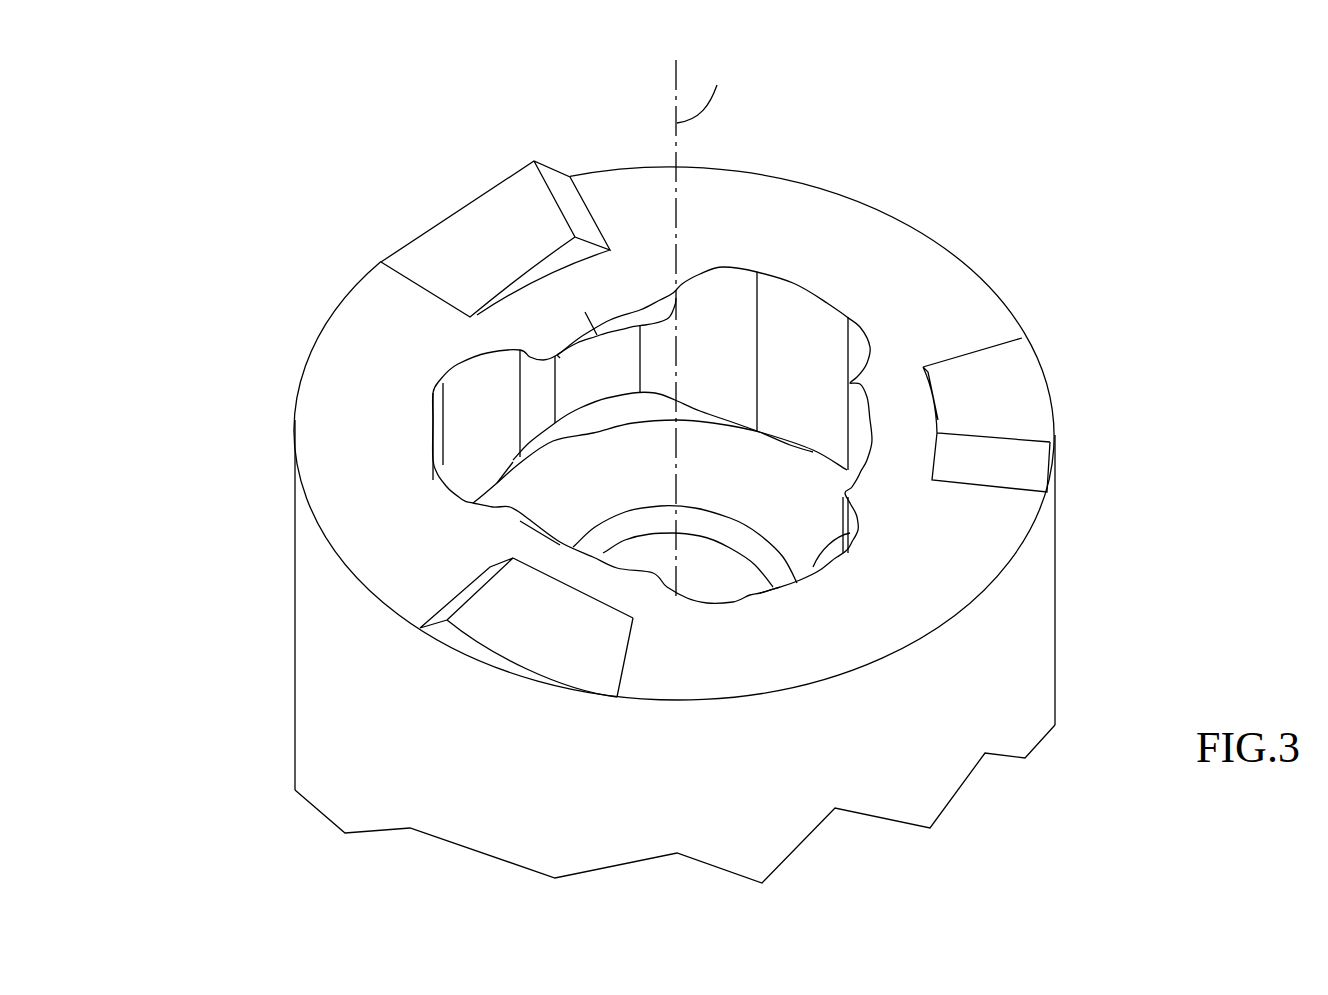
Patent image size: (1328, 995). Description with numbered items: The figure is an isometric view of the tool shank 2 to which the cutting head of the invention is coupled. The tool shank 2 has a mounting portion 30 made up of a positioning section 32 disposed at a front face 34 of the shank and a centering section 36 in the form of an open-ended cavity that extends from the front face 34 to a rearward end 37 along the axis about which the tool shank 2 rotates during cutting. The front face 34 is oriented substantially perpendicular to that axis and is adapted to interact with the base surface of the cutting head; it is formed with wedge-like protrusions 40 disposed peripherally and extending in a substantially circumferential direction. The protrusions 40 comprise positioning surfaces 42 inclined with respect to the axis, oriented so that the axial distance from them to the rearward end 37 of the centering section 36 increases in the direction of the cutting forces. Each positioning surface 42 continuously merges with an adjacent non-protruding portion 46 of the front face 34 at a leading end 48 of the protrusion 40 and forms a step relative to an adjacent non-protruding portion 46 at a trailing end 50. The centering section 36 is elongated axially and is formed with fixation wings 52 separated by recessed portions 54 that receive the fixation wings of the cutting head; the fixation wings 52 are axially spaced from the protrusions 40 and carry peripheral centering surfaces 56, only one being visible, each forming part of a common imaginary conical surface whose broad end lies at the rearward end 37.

The tool shank 2 is at (1066, 114).
The mounting portion 30 is at (208, 427).
The positioning section 32 is at (779, 210).
The front face 34 is at (960, 288).
The centering section 36 is at (780, 392).
The rearward end 37 is at (530, 490).
The wedge-like protrusions 40 is at (435, 235).
The positioning surfaces 42 is at (508, 253).
The non-protruding portion 46 is at (821, 644).
The leading end 48 is at (628, 650).
The trailing end 50 is at (445, 635).
The fixation wings 52 is at (603, 357).
The recessed portions 54 is at (472, 400).
The peripheral centering surfaces 56 is at (620, 415).